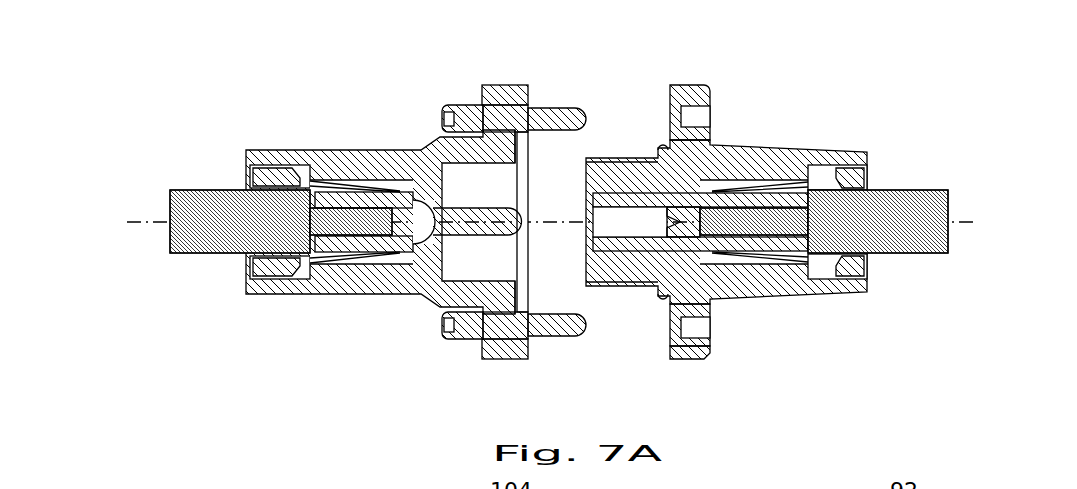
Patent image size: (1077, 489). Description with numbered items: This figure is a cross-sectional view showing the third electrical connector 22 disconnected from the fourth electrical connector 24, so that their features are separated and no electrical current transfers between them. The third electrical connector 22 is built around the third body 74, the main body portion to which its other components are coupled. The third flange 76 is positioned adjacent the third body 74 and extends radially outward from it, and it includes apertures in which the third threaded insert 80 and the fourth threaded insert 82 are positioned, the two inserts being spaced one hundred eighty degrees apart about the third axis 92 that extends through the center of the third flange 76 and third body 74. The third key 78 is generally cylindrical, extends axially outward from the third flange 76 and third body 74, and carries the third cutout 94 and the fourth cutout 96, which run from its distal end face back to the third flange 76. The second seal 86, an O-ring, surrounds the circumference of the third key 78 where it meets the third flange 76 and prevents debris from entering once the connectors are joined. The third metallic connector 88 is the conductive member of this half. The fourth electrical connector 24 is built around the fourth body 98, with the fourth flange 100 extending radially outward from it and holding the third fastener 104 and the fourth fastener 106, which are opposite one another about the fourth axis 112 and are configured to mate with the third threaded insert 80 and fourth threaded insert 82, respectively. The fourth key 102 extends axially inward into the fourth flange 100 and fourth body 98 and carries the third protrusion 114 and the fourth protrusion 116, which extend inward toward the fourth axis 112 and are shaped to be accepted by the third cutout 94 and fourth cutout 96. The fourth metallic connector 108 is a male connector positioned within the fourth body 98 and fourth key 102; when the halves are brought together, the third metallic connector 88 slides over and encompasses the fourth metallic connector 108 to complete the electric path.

The third electrical connector 22 is at (968, 108).
The fourth electrical connector 24 is at (190, 122).
The third body 74 is at (760, 278).
The third flange 76 is at (695, 348).
The third key 78 is at (700, 190).
The third threaded insert 80 is at (697, 118).
The fourth threaded insert 82 is at (700, 325).
The second seal 86 is at (862, 288).
The third metallic connector 88 is at (630, 181).
The third axis 92 is at (996, 222).
The third cutout 94 is at (621, 158).
The fourth cutout 96 is at (630, 290).
The fourth body 98 is at (338, 162).
The fourth flange 100 is at (490, 350).
The fourth key 102 is at (440, 293).
The third fastener 104 is at (438, 117).
The fourth fastener 106 is at (445, 332).
The fourth metallic connector 108 is at (440, 207).
The fourth axis 112 is at (143, 220).
The third protrusion 114 is at (498, 222).
The fourth protrusion 116 is at (498, 222).